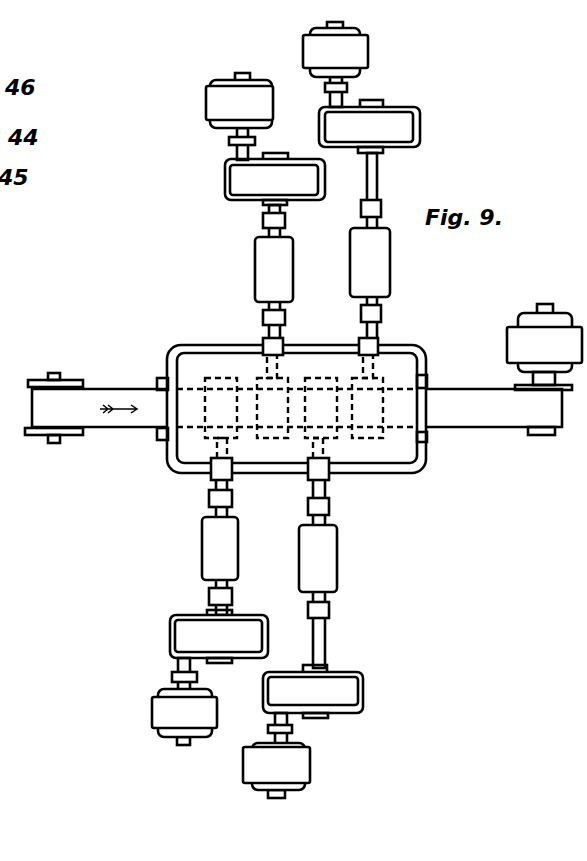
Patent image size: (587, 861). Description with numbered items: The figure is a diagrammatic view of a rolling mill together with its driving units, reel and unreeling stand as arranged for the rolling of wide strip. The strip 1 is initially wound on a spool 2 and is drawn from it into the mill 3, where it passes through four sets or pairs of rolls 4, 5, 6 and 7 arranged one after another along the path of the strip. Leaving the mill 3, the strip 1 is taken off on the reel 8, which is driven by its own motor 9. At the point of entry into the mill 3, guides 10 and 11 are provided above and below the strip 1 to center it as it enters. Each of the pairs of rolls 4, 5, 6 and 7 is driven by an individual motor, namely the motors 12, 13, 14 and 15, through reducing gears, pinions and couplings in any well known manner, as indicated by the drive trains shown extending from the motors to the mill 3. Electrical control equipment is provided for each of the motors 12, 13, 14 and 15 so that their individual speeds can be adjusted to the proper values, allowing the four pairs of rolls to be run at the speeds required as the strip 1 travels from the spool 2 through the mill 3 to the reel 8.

The strip 1 is at (103, 422).
The spool 2 is at (27, 380).
The mill 3 is at (203, 355).
The pair of rolls 4 is at (212, 432).
The pair of rolls 5 is at (278, 448).
The pair of rolls 6 is at (324, 370).
The pair of rolls 7 is at (380, 380).
The reel 8 is at (515, 387).
The motor 9 is at (520, 335).
The guide 10 is at (163, 382).
The guide 11 is at (162, 437).
The motor 12 is at (160, 718).
The motor 13 is at (206, 105).
The motor 14 is at (307, 767).
The motor 15 is at (363, 53).